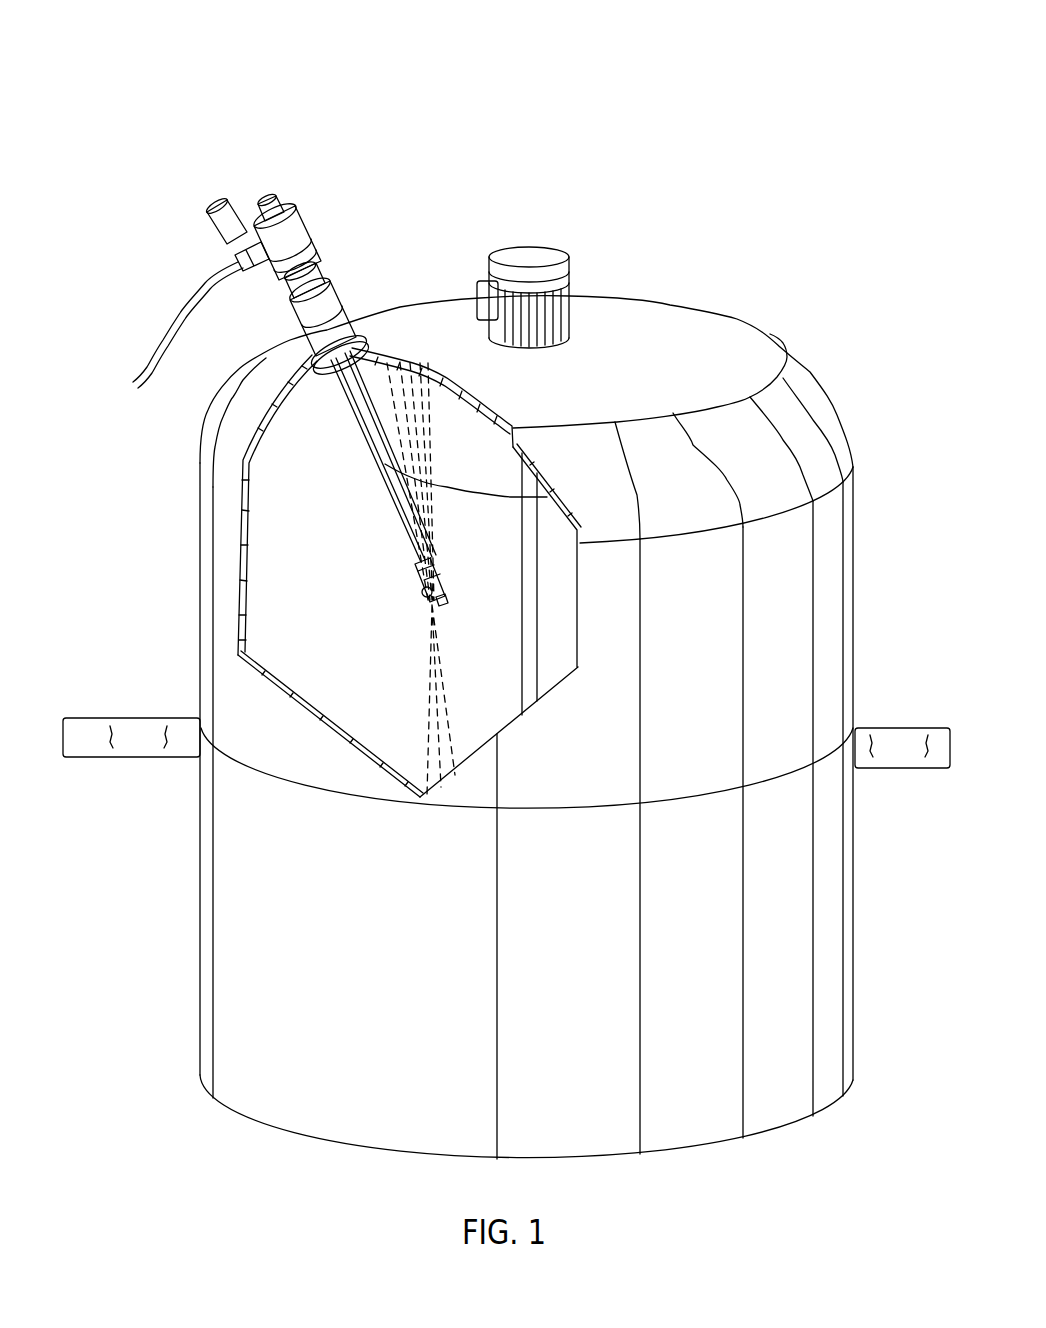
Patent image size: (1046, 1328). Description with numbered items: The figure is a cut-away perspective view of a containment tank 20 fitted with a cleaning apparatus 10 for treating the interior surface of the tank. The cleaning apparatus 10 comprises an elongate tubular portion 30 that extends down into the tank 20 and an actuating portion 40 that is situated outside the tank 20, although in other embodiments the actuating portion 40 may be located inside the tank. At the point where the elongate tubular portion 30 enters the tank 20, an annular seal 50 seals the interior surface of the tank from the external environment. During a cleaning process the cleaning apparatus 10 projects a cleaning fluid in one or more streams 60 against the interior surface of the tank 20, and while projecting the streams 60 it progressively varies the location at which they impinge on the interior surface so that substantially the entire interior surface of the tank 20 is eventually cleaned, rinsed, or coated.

The cleaning apparatus 10 is at (295, 213).
The tank 20 is at (614, 333).
The elongate tubular portion 30 is at (547, 497).
The actuating portion 40 is at (323, 260).
The annular seal 50 is at (365, 340).
The streams 60 is at (433, 665).